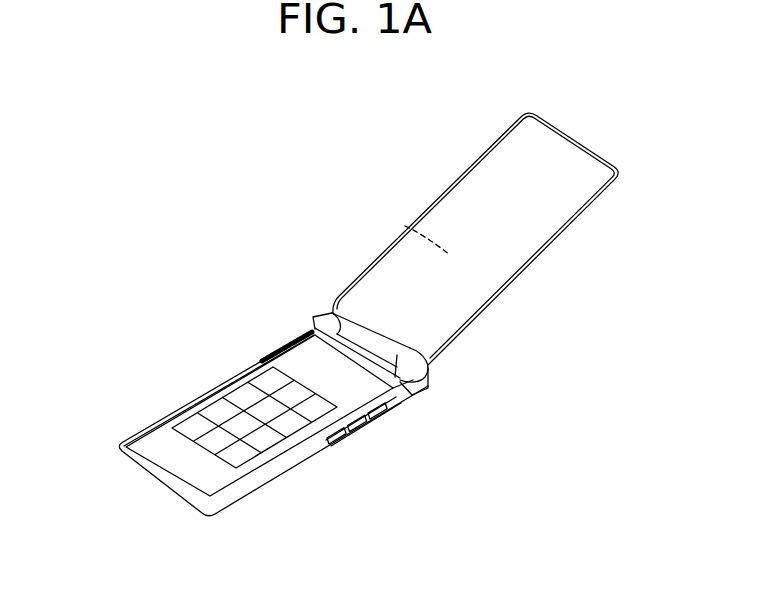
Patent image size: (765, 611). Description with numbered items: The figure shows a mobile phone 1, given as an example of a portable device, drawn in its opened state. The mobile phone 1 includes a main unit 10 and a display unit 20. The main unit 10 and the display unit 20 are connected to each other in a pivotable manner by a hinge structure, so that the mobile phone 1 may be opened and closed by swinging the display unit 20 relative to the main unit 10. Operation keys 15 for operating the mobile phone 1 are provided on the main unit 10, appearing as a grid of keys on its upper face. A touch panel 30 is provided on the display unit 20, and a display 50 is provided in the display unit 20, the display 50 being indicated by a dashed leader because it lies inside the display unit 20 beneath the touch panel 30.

The mobile phone 1 is at (178, 177).
The main unit 10 is at (236, 509).
The operation keys 15 is at (250, 386).
The display unit 20 is at (490, 318).
The touch panel 30 is at (373, 283).
The display 50 is at (405, 226).